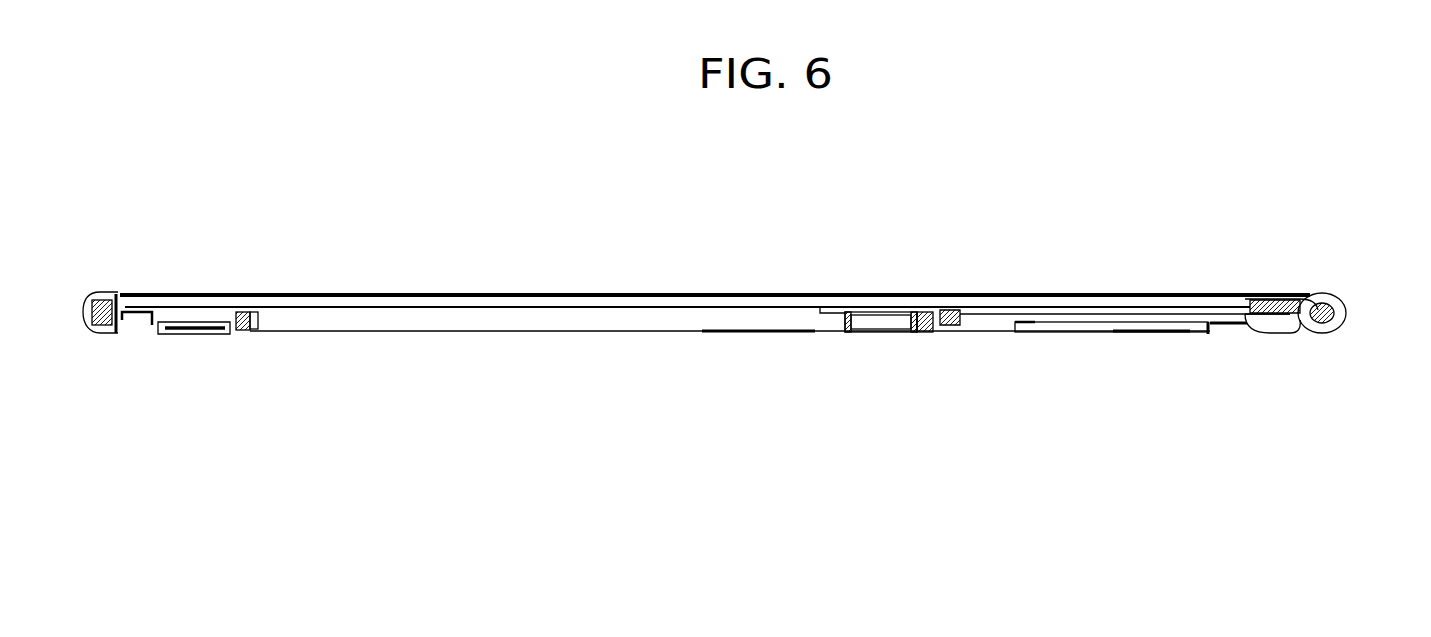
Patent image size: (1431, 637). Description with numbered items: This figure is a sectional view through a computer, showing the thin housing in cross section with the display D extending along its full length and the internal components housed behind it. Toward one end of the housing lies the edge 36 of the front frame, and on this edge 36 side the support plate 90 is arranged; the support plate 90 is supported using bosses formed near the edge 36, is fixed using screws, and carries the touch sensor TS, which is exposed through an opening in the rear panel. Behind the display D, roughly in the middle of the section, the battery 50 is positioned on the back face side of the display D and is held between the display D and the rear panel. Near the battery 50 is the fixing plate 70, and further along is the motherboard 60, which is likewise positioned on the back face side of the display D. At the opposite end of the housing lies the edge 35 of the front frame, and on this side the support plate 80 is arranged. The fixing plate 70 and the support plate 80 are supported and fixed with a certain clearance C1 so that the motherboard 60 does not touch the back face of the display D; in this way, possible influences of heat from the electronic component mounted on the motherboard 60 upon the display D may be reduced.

The display D is at (668, 296).
The clearance C1 is at (1085, 310).
The support plate 80 is at (1275, 296).
The edge 35 is at (1346, 316).
The edge 36 is at (86, 332).
The support plate 90 is at (141, 328).
The touch sensor TS is at (206, 334).
The battery 50 is at (873, 333).
The fixing plate 70 is at (930, 333).
The motherboard 60 is at (1208, 335).